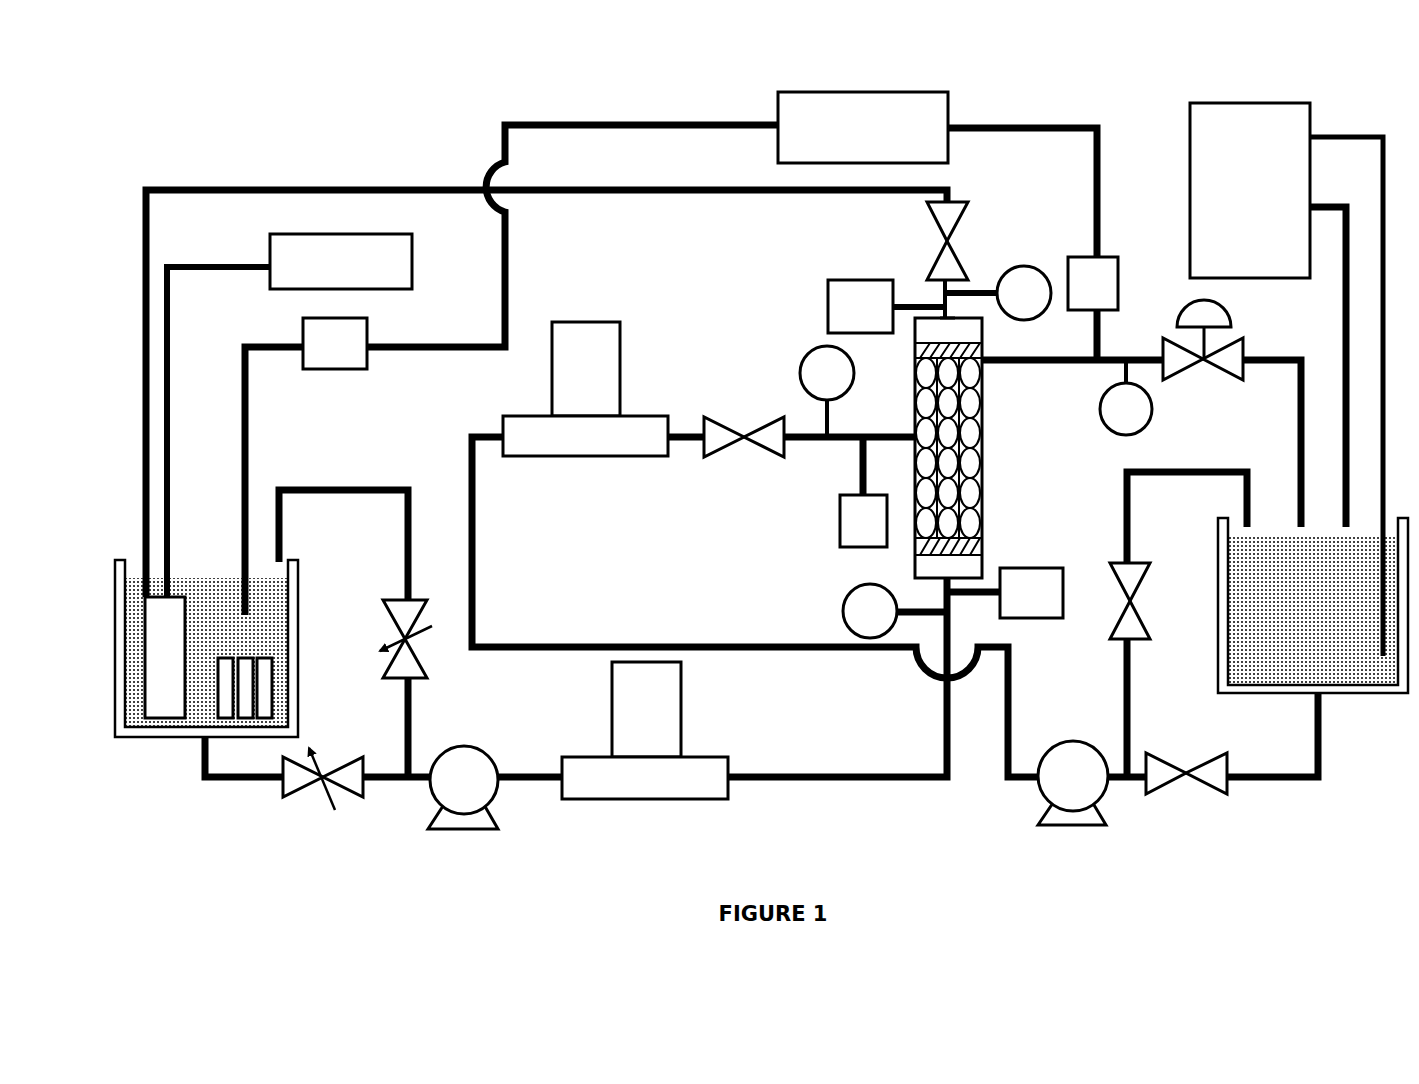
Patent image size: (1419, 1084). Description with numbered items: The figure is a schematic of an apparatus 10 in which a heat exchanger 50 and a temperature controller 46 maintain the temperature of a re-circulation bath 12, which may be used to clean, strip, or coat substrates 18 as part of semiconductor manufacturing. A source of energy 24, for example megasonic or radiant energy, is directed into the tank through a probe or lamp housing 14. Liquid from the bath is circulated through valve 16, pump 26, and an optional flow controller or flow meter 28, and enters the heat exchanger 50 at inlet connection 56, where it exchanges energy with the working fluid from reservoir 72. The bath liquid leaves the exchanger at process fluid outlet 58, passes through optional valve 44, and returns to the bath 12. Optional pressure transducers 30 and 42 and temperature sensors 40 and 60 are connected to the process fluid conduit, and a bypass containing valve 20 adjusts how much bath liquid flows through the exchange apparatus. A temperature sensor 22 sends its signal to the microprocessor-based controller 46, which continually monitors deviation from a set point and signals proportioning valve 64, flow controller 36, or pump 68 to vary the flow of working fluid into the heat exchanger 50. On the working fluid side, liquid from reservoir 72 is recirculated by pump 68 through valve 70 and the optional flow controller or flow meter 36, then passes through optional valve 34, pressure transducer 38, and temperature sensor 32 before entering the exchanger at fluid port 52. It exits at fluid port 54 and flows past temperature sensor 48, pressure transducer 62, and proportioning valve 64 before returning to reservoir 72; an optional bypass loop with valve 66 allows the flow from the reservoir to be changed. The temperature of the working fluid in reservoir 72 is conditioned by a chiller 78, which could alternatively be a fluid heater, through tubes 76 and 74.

The electrolyte regeneration system 10 is at (150, 151).
The re-circulation bath 12 is at (260, 575).
The probe or lamp housing 14 is at (163, 705).
The valve 16 is at (295, 782).
The substrates 18 is at (268, 703).
The bypass valve 20 is at (415, 615).
The temperature sensor 22 is at (335, 369).
The source of energy 24 is at (308, 234).
The pump 26 is at (460, 757).
The flow controller or flow meter 28 is at (705, 757).
The pressure transducer 30 is at (843, 611).
The temperature sensor 32 is at (840, 515).
The valve 34 is at (718, 452).
The flow controller or flow meter 36 is at (586, 322).
The pressure transducer 38 is at (800, 372).
The temperature sensor 40 is at (828, 300).
The pressure transducer 42 is at (1012, 268).
The valve 44 is at (928, 255).
The temperature controller 46 is at (778, 141).
The temperature sensor 48 is at (1075, 260).
The heat exchanger 50 is at (945, 452).
The fluid port 52 is at (915, 433).
The fluid port 54 is at (982, 368).
The inlet connection 56 is at (940, 585).
The process fluid outlet 58 is at (950, 317).
The temperature sensor 60 is at (1035, 620).
The pressure transducer 62 is at (1105, 430).
The proportioning valve 64 is at (1210, 365).
The bypass valve 66 is at (1115, 592).
The pump 68 is at (1048, 795).
The valve 70 is at (1175, 785).
The working fluid reservoir 72 is at (1348, 695).
The tube 74 is at (1343, 360).
The tube 76 is at (1323, 135).
The chiller 78 is at (1190, 190).